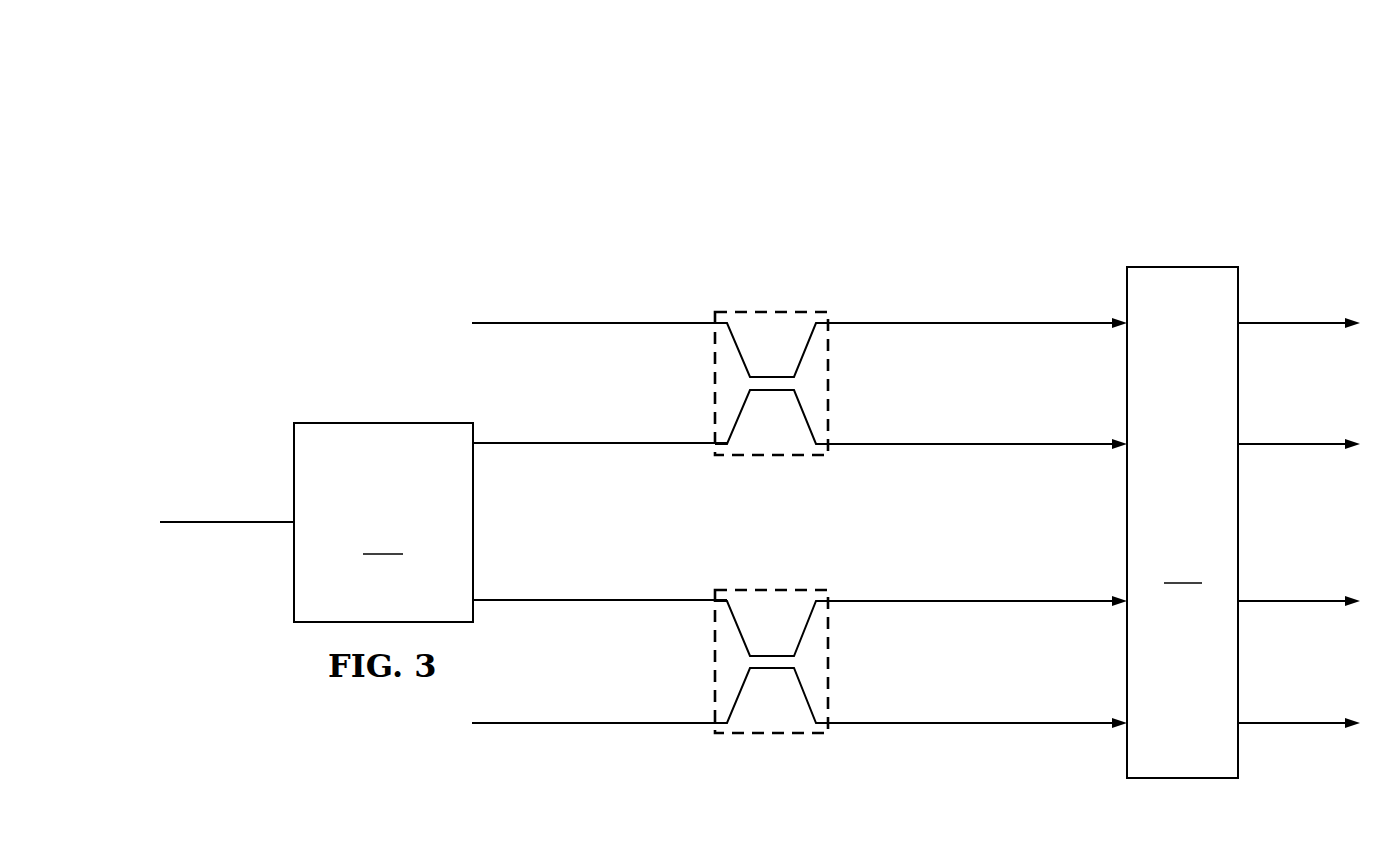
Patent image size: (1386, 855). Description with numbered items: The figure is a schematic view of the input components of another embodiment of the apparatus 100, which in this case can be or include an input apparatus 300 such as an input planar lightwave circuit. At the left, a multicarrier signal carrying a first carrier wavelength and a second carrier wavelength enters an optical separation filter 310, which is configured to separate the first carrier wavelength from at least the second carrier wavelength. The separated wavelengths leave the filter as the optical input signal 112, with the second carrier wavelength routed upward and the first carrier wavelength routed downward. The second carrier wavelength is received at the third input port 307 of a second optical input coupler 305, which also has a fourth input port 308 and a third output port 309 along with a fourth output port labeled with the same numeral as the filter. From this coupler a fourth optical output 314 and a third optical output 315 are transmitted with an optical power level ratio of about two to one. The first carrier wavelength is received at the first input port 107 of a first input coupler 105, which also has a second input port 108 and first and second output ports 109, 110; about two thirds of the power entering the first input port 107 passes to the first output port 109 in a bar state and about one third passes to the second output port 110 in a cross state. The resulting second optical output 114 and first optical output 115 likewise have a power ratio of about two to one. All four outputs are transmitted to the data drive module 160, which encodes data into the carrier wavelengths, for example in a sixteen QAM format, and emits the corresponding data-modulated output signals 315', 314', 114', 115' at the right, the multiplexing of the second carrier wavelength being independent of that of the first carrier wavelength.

The apparatus 100 is at (202, 181).
The input apparatus 300 is at (1309, 228).
The optical input signal 112 is at (228, 525).
The optical separation filter 310 is at (812, 310).
The second optical input coupler 305 is at (752, 438).
The third input port 307 is at (732, 457).
The fourth input port 308 is at (732, 310).
The third output port 309 is at (812, 457).
The first input coupler 105 is at (752, 717).
The first input port 107 is at (732, 588).
The second input port 108 is at (732, 735).
The first output port 109 is at (812, 588).
The second output port 110 is at (812, 735).
The third optical output 315 is at (971, 337).
The fourth optical output 314 is at (971, 458).
The second optical output 114 is at (971, 615).
The first optical output 115 is at (971, 737).
The data drive module 160 is at (1182, 522).
The data-modulated output signal 315' is at (1299, 335).
The data-modulated output signal 314' is at (1299, 457).
The data-modulated output signal 114' is at (1299, 613).
The data-modulated output signal 115' is at (1299, 736).